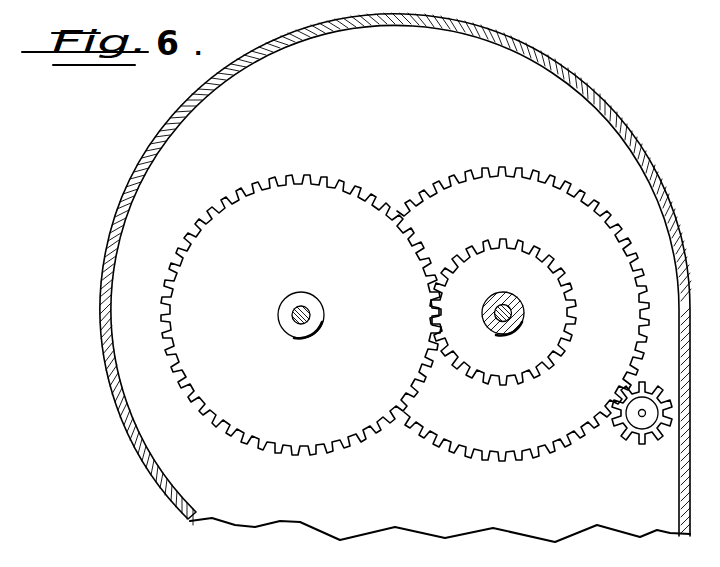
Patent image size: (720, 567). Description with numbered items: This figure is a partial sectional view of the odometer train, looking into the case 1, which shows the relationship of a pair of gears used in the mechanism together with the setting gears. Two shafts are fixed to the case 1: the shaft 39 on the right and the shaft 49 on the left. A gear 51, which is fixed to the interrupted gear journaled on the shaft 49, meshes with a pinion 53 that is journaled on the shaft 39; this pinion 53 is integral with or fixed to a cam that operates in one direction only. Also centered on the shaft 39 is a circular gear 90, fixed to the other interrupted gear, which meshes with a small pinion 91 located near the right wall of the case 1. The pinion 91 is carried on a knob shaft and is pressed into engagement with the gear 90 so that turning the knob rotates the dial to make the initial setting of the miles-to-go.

The case 1 is at (165, 127).
The shaft 39 is at (504, 312).
The shaft 49 is at (301, 320).
The gear 51 is at (359, 442).
The pinion 53 is at (520, 384).
The circular gear 90 is at (566, 443).
The pinion 91 is at (641, 445).